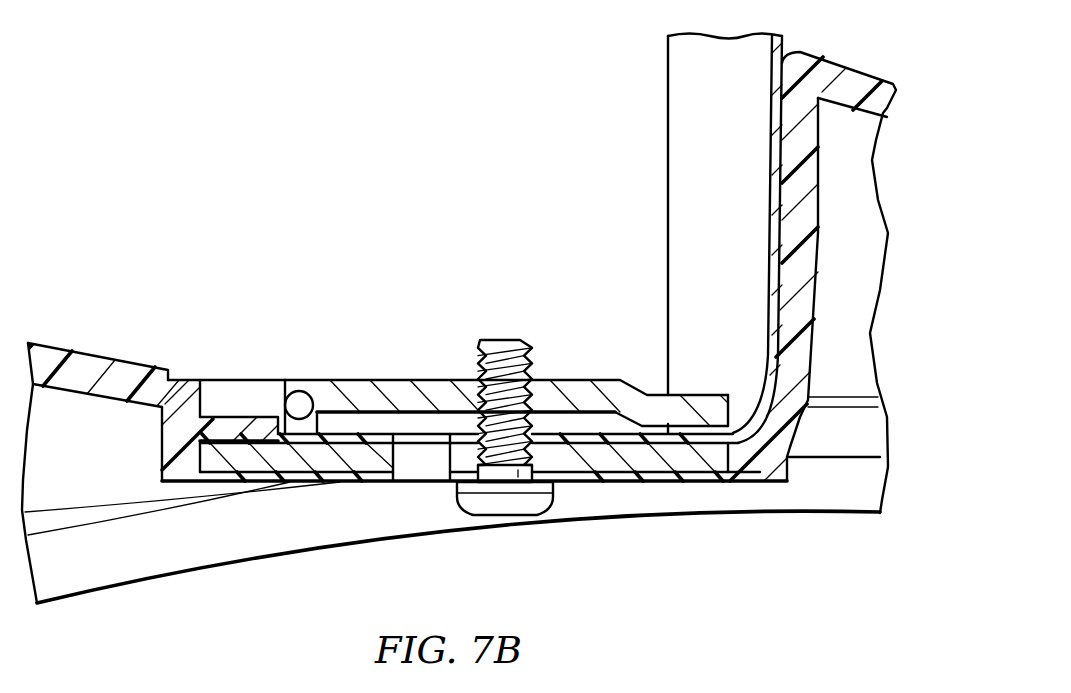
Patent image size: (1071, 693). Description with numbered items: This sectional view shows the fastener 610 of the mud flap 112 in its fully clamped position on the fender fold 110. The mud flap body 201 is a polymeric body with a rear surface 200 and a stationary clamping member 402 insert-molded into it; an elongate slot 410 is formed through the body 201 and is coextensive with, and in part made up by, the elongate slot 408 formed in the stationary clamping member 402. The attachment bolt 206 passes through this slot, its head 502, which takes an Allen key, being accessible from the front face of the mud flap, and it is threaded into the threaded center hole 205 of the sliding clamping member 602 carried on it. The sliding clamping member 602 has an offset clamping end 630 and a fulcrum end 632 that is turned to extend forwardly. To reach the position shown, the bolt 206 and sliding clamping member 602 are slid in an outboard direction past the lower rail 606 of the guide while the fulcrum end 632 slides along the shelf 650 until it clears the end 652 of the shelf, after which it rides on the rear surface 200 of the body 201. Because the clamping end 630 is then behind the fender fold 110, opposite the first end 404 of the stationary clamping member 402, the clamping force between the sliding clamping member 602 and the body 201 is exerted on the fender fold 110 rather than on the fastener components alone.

The fender fold 110 is at (782, 274).
The mud flap 112 is at (451, 483).
The rear surface 200 is at (525, 383).
The mud flap body 201 is at (103, 351).
The threaded center hole 205 is at (484, 384).
The attachment bolt 206 is at (505, 382).
The stationary clamping member 402 is at (480, 489).
The first end 404 is at (491, 519).
The elongate slot 408 is at (427, 512).
The elongate slot 410 is at (469, 518).
The head 502 is at (505, 540).
The sliding clamping member 602 is at (506, 367).
The lower wall portion or rail 606 is at (474, 389).
The fastener 610 is at (411, 226).
The clamping end 630 is at (708, 381).
The fulcrum end 632 is at (285, 358).
The shelf 650 is at (239, 387).
The end 652 is at (305, 383).